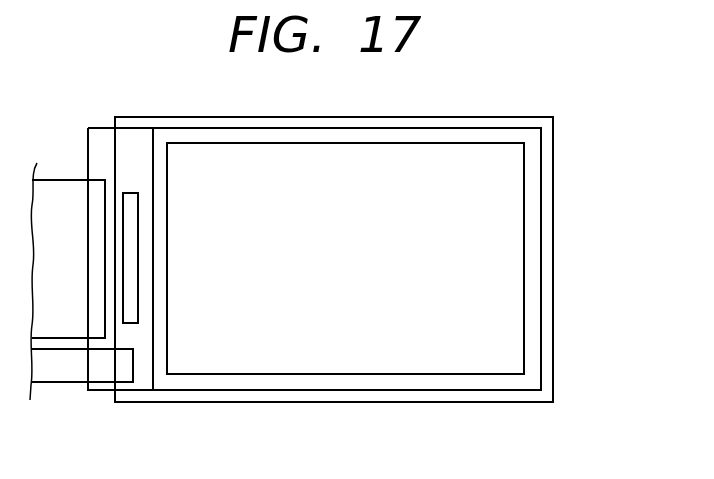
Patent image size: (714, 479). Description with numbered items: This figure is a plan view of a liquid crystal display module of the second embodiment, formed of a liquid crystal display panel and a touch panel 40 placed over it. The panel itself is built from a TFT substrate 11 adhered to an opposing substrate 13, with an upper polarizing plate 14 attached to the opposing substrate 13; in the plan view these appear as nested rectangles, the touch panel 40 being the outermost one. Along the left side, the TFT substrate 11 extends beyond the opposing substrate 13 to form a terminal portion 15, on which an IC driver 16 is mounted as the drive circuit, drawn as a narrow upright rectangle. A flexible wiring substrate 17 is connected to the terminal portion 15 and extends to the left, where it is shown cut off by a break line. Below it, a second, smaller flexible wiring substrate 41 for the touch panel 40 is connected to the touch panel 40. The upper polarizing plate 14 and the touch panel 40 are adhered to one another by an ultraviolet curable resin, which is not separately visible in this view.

The TFT substrate 11 is at (143, 128).
The opposing substrate 13 is at (395, 390).
The upper polarizing plate 14 is at (527, 280).
The terminal portion 15 is at (100, 143).
The IC driver 16 is at (133, 190).
The flexible wiring substrate 17 is at (52, 178).
The touch panel 40 is at (553, 139).
The flexible wiring substrate for the touch panel 41 is at (72, 383).